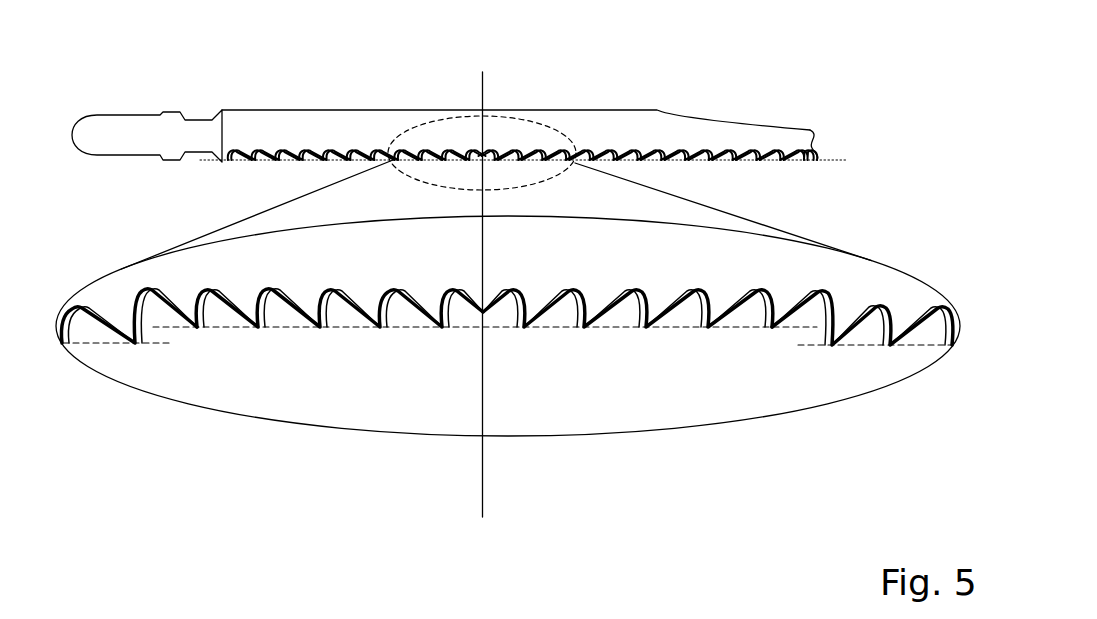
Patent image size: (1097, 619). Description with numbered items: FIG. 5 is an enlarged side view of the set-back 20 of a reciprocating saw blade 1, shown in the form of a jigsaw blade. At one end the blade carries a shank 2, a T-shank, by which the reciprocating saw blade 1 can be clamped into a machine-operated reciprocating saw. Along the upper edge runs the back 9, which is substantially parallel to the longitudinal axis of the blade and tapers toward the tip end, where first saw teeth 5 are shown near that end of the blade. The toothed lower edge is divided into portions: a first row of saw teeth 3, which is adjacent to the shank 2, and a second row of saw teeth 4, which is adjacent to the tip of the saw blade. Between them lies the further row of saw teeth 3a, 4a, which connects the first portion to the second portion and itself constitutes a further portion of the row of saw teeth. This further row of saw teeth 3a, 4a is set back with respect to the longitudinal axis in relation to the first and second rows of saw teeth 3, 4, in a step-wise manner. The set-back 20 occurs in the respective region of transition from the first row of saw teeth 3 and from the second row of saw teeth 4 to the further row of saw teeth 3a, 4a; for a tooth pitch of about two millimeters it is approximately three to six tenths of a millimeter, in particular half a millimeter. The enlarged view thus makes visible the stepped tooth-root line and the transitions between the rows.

The reciprocating saw blade 1 is at (337, 77).
The shank 2 is at (108, 90).
The back 9 is at (620, 110).
The first saw teeth 5 is at (826, 140).
The first row of saw teeth 3 is at (107, 353).
The further row of saw teeth 3a is at (358, 339).
The second row of saw teeth 4 is at (863, 362).
The further row of saw teeth 4a is at (610, 335).
The set-back 20 is at (173, 339).